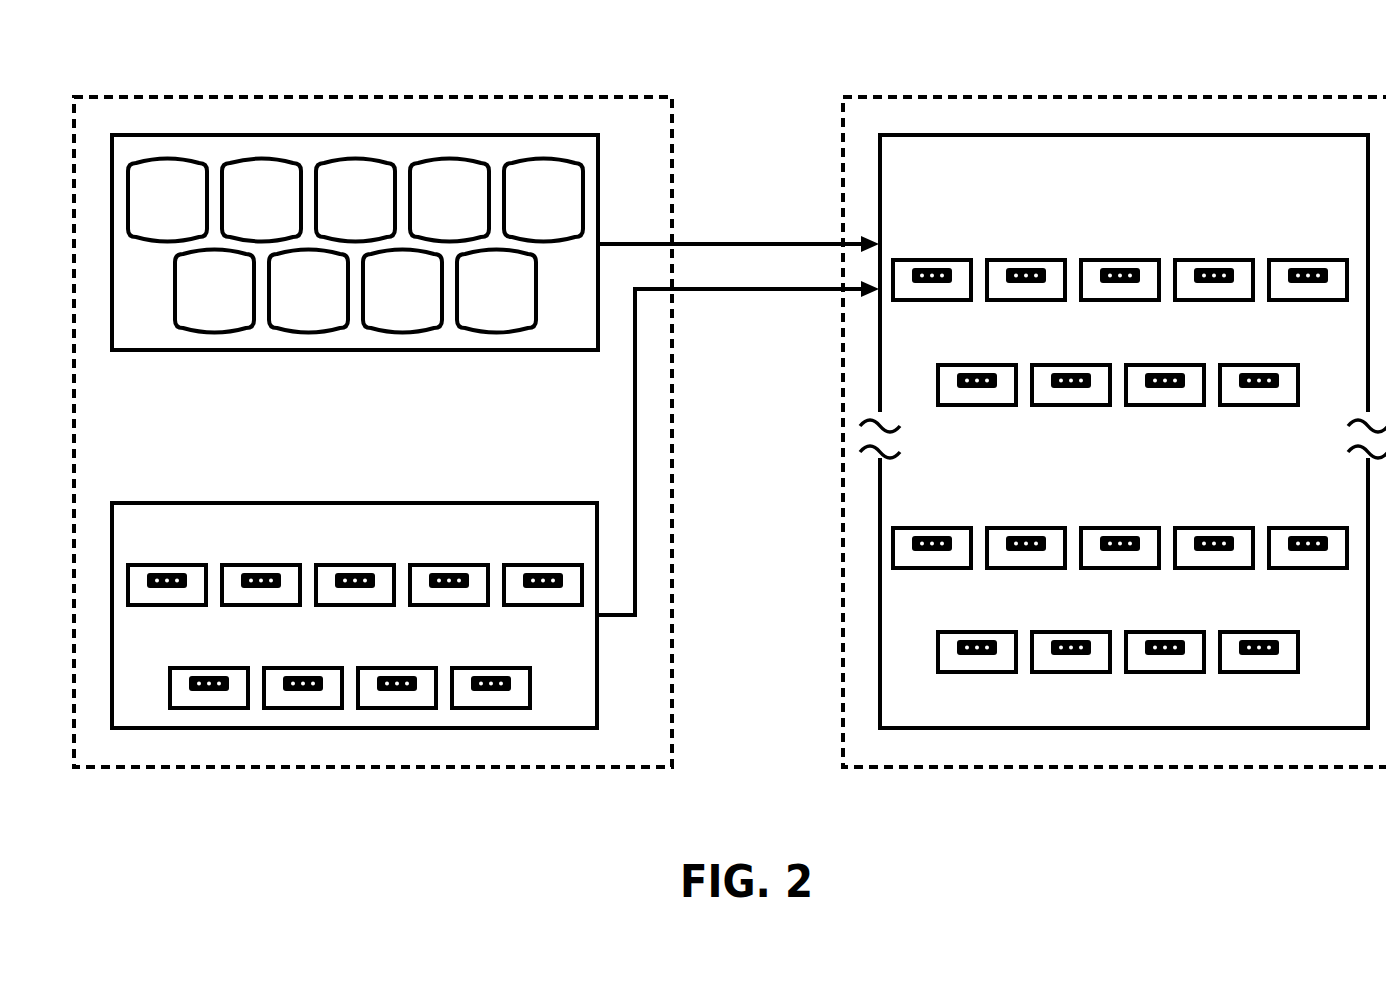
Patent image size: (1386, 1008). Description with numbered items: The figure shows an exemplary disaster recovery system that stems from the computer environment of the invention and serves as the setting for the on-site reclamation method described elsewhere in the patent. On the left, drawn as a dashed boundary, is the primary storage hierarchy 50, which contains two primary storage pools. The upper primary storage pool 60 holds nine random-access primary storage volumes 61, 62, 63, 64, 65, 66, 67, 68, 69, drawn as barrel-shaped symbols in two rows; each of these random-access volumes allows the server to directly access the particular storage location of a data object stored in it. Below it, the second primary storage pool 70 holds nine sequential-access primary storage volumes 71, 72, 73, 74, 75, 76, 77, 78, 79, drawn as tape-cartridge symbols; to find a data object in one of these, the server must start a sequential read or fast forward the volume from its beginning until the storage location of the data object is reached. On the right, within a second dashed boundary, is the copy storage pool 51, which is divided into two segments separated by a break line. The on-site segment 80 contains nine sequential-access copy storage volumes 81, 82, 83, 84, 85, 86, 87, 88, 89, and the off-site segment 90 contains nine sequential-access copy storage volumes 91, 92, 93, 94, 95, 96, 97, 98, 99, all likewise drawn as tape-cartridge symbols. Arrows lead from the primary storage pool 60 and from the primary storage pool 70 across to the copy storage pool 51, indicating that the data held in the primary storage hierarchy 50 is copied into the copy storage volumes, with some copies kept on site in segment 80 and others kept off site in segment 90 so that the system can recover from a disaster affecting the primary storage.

The primary storage hierarchy 50 is at (375, 97).
The copy storage pool 51 is at (1122, 97).
The primary storage pool 60 is at (358, 350).
The random-access primary storage volume 61 is at (155, 216).
The random-access primary storage volume 62 is at (249, 216).
The random-access primary storage volume 63 is at (343, 216).
The random-access primary storage volume 64 is at (437, 216).
The random-access primary storage volume 65 is at (531, 216).
The random-access primary storage volume 66 is at (202, 307).
The random-access primary storage volume 67 is at (296, 307).
The random-access primary storage volume 68 is at (390, 307).
The random-access primary storage volume 69 is at (484, 307).
The primary storage pool 70 is at (352, 503).
The sequential-access primary storage volume 71 is at (167, 563).
The sequential-access primary storage volume 72 is at (261, 563).
The sequential-access primary storage volume 73 is at (355, 563).
The sequential-access primary storage volume 74 is at (449, 563).
The sequential-access primary storage volume 75 is at (543, 563).
The sequential-access primary storage volume 76 is at (209, 666).
The sequential-access primary storage volume 77 is at (303, 666).
The sequential-access primary storage volume 78 is at (397, 666).
The sequential-access primary storage volume 79 is at (491, 666).
The on-site segment 80 is at (1135, 187).
The sequential-access copy storage volume 81 is at (932, 258).
The sequential-access copy storage volume 82 is at (1026, 258).
The sequential-access copy storage volume 83 is at (1120, 258).
The sequential-access copy storage volume 84 is at (1214, 258).
The sequential-access copy storage volume 85 is at (1308, 258).
The sequential-access copy storage volume 86 is at (977, 363).
The sequential-access copy storage volume 87 is at (1071, 363).
The sequential-access copy storage volume 88 is at (1165, 363).
The sequential-access copy storage volume 89 is at (1259, 363).
The off-site segment 90 is at (1127, 712).
The sequential-access copy storage volume 91 is at (932, 526).
The sequential-access copy storage volume 92 is at (1026, 526).
The sequential-access copy storage volume 93 is at (1120, 526).
The sequential-access copy storage volume 94 is at (1214, 526).
The sequential-access copy storage volume 95 is at (1308, 526).
The sequential-access copy storage volume 96 is at (977, 630).
The sequential-access copy storage volume 97 is at (1071, 630).
The sequential-access copy storage volume 98 is at (1165, 630).
The sequential-access copy storage volume 99 is at (1259, 630).